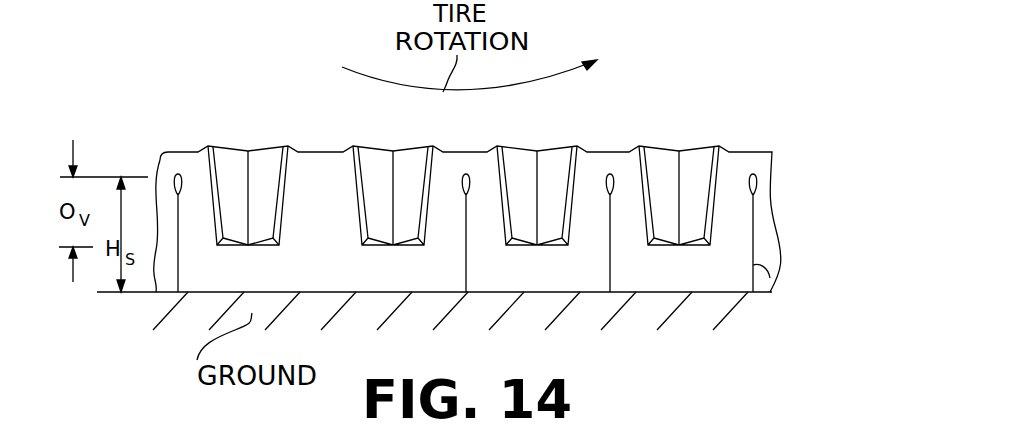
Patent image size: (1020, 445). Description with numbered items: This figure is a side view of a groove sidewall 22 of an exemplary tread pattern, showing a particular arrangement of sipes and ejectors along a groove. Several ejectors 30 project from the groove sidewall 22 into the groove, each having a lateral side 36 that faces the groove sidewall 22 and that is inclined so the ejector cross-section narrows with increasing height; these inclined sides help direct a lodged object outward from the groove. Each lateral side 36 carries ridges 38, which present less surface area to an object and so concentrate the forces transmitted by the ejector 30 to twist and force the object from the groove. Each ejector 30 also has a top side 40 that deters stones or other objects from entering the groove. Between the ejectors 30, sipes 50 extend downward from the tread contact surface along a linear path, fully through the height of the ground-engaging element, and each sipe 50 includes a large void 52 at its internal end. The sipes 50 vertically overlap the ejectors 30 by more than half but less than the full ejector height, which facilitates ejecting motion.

The groove sidewall 22 is at (693, 271).
The ejector 30 is at (447, 184).
The lateral side 36 is at (235, 163).
The ridge 38 is at (280, 158).
The top side 40 is at (228, 246).
The sipe 50 is at (768, 290).
The void 52 is at (757, 178).